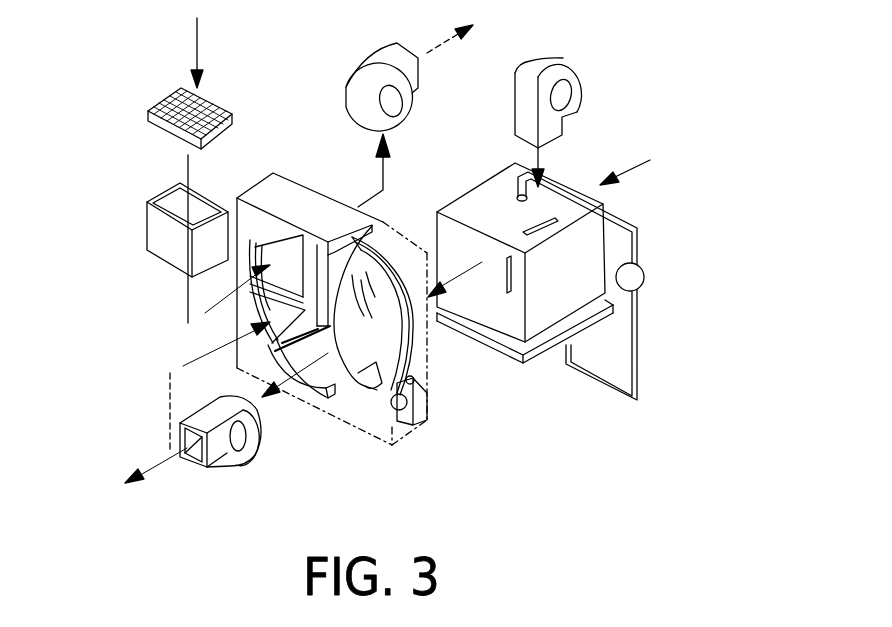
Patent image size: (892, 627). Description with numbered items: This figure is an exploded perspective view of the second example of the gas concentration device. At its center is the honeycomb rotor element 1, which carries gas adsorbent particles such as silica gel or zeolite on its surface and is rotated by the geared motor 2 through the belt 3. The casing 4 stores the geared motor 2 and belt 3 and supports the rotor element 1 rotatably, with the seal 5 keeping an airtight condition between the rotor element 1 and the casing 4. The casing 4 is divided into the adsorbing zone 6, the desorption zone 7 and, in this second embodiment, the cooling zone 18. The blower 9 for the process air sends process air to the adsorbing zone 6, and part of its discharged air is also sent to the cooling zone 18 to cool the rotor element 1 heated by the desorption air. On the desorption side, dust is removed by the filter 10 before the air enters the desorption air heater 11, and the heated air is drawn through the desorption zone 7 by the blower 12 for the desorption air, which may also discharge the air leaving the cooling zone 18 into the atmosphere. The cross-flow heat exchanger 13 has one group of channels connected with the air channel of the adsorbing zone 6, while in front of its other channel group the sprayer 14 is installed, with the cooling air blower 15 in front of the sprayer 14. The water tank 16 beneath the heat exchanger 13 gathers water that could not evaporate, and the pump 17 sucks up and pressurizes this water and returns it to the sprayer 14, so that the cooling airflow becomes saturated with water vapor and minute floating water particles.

The honeycomb rotor element 1 is at (373, 245).
The geared motor 2 is at (420, 427).
The belt 3 is at (420, 360).
The casing 4 is at (318, 208).
The seal 5 is at (322, 390).
The adsorbing zone 6 is at (347, 395).
The desorption zone 7 is at (282, 248).
The blower for the process air 9 is at (252, 460).
The filter 10 is at (148, 113).
The desorption air heater 11 is at (147, 216).
The blower for the desorption air 12 is at (358, 70).
The cross-flow heat exchanger 13 is at (477, 205).
The sprayer 14 is at (518, 193).
The cooling air blower 15 is at (583, 92).
The water tank 16 is at (517, 360).
The pump 17 is at (645, 276).
The cooling zone 18 is at (268, 308).